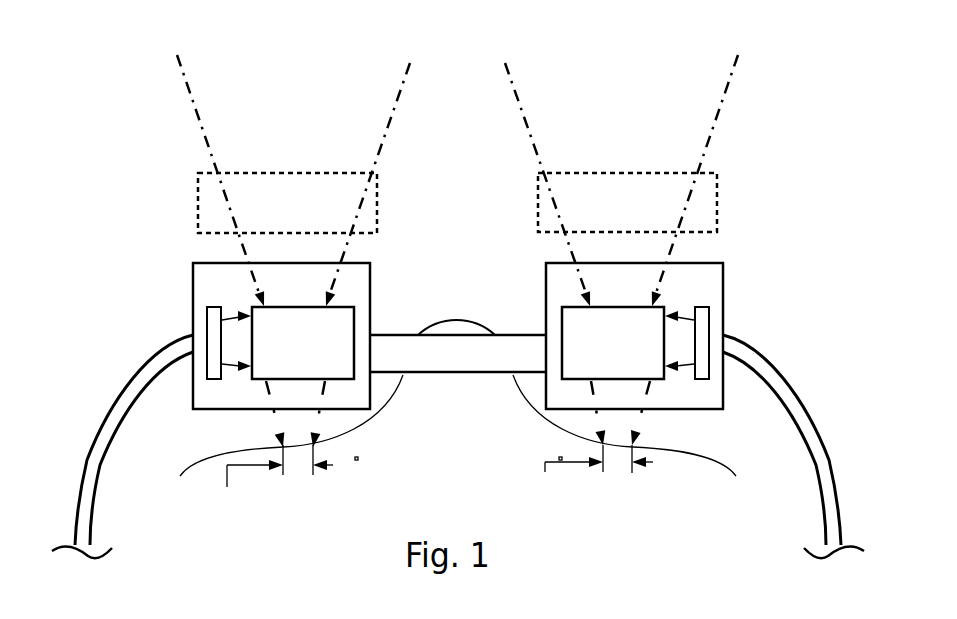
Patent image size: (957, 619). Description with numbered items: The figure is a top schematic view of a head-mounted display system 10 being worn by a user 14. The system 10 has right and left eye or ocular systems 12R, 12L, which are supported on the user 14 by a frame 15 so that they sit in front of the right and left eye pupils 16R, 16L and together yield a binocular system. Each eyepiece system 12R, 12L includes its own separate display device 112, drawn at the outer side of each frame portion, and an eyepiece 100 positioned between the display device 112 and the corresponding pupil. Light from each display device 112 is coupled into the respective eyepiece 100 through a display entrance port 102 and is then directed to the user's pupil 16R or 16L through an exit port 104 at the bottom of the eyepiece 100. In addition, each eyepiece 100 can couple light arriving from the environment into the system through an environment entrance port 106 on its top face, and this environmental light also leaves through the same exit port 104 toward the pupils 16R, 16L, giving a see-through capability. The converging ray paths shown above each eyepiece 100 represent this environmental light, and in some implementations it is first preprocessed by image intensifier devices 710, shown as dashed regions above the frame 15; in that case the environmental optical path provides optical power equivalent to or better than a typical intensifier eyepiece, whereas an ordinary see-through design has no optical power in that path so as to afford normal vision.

The head-mounted display system 10 is at (136, 233).
The left eye ocular system 12L is at (193, 303).
The right eye ocular system 12R is at (723, 283).
The frame 15 is at (410, 334).
The eyepiece 100 is at (362, 292).
The display entrance port 102 is at (251, 365).
The exit port 104 is at (313, 381).
The environment entrance port 106 is at (303, 307).
The display device 112 is at (207, 323).
The image intensifier device 710 is at (538, 205).
The user 14 is at (391, 480).
The left eye pupil 16L is at (281, 440).
The right eye pupil 16R is at (604, 433).